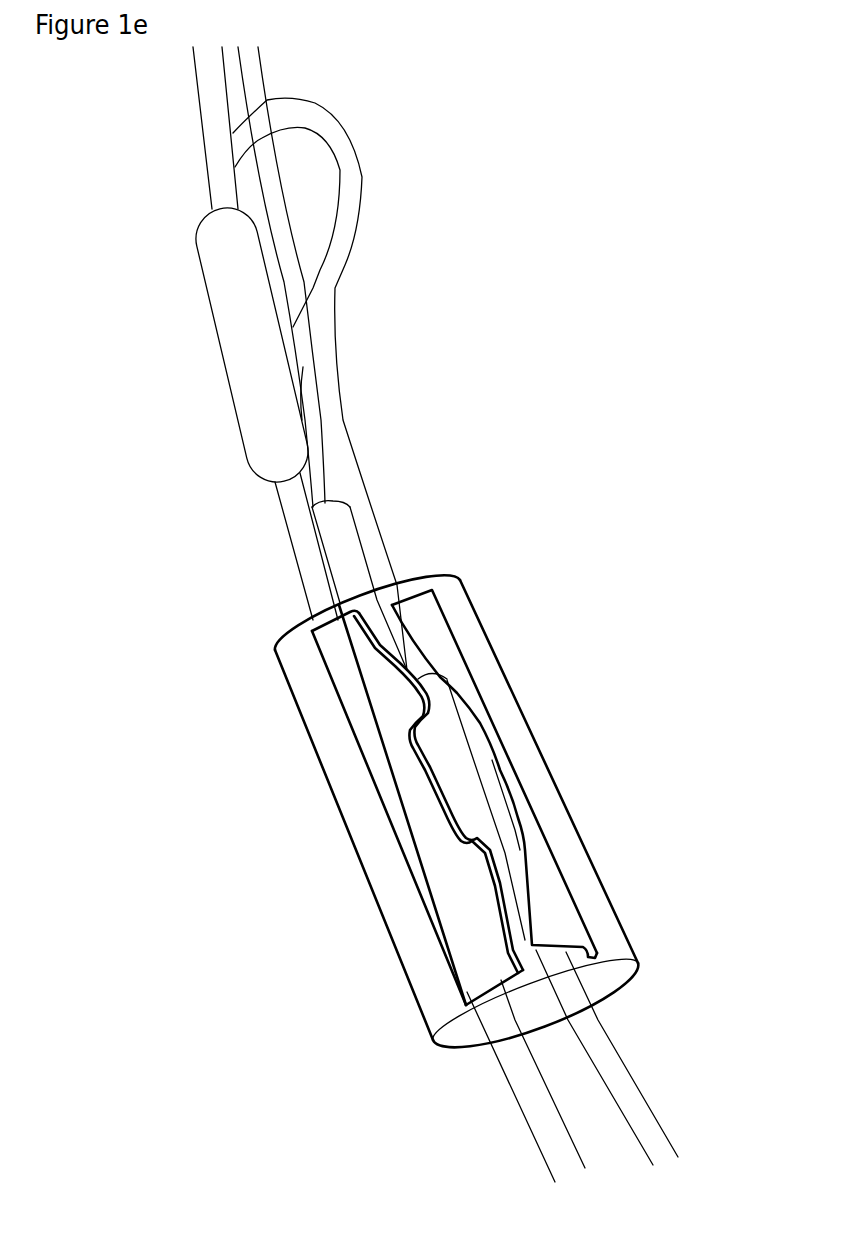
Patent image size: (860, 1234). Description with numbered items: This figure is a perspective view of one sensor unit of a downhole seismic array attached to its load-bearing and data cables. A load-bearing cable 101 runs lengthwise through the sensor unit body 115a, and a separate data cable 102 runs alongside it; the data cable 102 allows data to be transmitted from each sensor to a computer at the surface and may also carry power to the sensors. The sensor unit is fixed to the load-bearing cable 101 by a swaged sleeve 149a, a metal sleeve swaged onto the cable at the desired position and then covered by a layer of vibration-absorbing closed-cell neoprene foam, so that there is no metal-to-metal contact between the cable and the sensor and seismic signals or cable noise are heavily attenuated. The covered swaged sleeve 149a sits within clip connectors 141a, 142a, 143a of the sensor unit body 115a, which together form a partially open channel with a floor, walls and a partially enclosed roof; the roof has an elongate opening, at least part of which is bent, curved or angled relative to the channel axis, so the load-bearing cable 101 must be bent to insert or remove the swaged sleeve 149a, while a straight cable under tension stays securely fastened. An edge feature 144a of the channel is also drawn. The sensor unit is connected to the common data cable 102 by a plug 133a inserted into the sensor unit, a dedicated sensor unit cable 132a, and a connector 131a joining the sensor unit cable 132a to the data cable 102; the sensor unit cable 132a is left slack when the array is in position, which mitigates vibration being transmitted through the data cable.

The load-bearing cable 101 is at (267, 133).
The data cable 102 is at (307, 560).
The connector 131a is at (243, 323).
The sensor unit cable 132a is at (353, 175).
The plug 133a is at (347, 538).
The clip connector 141a is at (417, 617).
The clip connector 142a is at (553, 928).
The clip connector 143a is at (402, 698).
The channel edge 144a is at (488, 878).
The swaged sleeve 149a is at (478, 803).
The sensor unit body 115a is at (540, 1006).